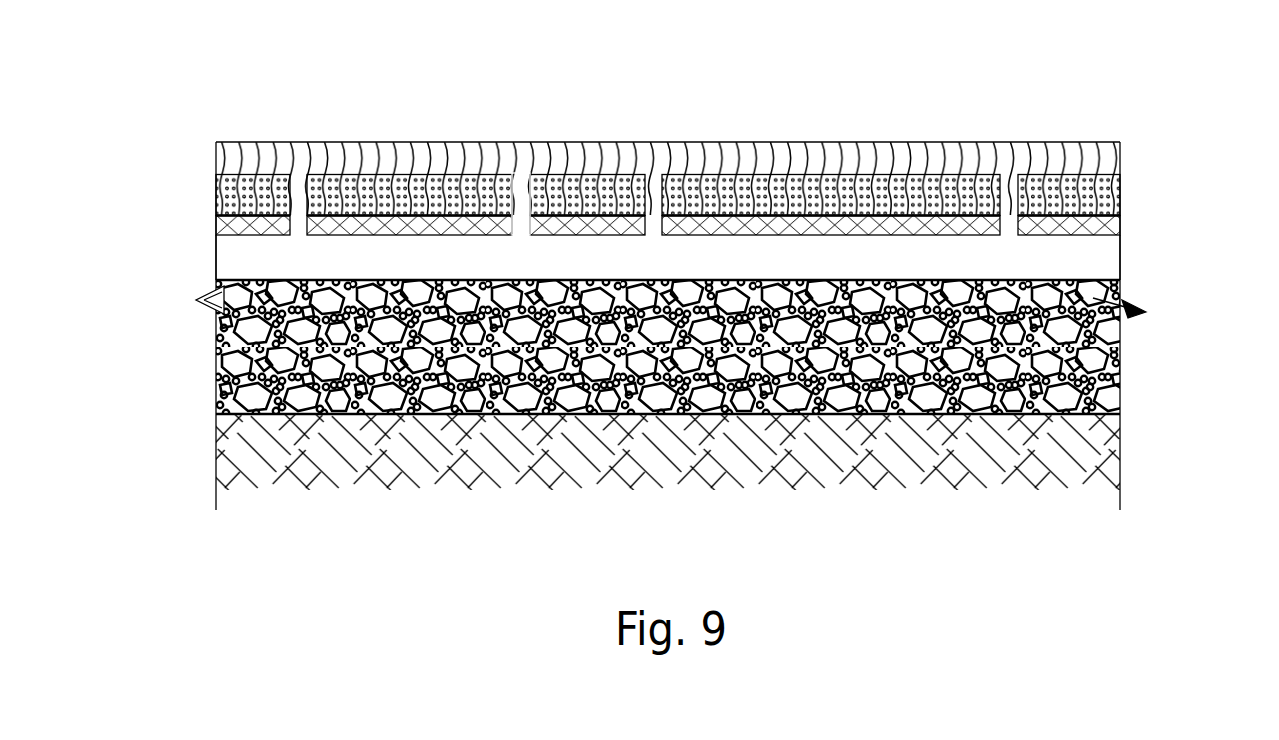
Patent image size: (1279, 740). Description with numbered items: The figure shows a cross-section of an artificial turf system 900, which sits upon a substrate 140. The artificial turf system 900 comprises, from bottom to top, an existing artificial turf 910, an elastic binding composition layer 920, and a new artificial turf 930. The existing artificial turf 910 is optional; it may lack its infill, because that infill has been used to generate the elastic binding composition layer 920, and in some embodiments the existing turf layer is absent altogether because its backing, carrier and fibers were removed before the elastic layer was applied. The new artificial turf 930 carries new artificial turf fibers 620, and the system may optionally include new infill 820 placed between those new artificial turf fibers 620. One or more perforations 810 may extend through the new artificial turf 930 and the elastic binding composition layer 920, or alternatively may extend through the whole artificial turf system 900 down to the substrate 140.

The new artificial turf 930 is at (1126, 168).
The new artificial turf fibers 620 is at (376, 148).
The new infill 820 is at (772, 178).
The perforations 810 is at (519, 214).
The elastic binding composition layer 920 is at (216, 222).
The existing artificial turf 910 is at (1094, 259).
The substrate 140 is at (1117, 358).
The artificial turf system 900 is at (845, 501).